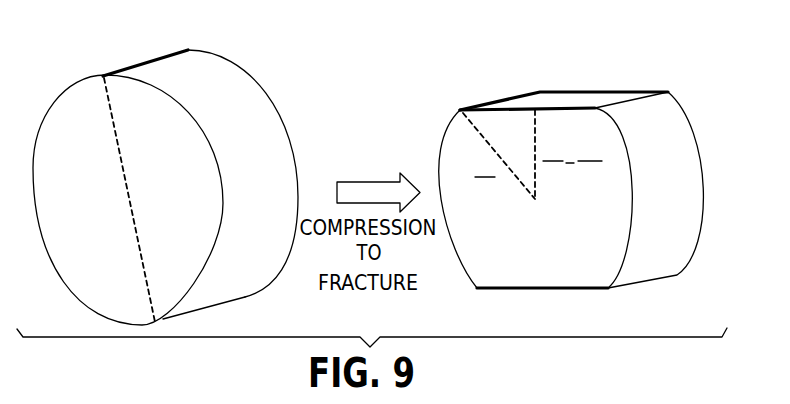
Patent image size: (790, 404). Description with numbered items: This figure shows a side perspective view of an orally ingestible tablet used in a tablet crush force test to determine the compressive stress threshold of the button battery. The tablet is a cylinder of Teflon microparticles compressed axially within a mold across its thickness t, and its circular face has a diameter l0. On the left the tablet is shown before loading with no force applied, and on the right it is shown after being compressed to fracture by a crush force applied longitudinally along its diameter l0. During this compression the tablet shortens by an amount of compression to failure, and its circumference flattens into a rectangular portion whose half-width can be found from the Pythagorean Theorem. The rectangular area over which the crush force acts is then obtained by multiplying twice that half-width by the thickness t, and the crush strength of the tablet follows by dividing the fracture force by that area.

The thickness of the tablet t is at (145, 67).
The diameter of the tablet l0 is at (129, 200).